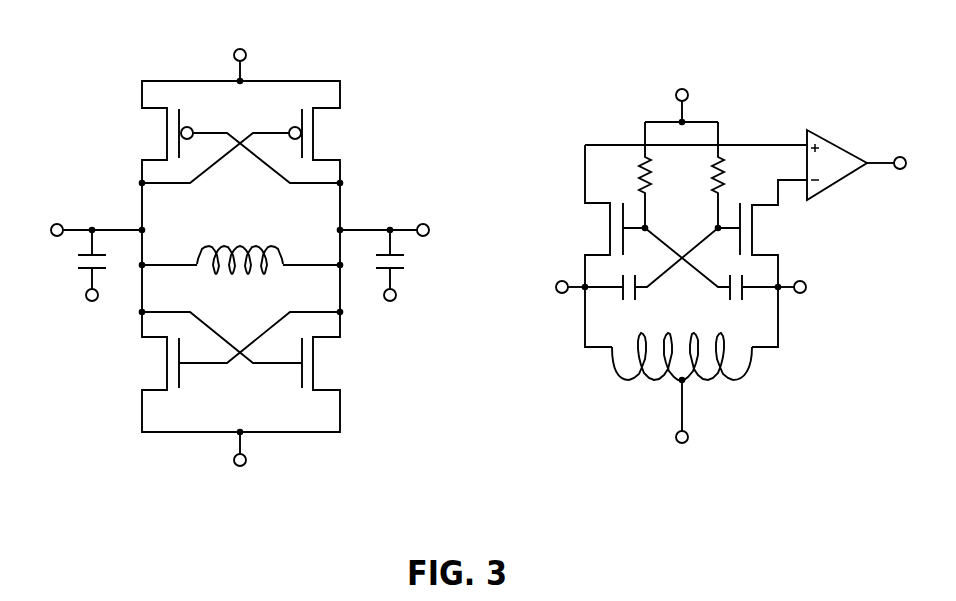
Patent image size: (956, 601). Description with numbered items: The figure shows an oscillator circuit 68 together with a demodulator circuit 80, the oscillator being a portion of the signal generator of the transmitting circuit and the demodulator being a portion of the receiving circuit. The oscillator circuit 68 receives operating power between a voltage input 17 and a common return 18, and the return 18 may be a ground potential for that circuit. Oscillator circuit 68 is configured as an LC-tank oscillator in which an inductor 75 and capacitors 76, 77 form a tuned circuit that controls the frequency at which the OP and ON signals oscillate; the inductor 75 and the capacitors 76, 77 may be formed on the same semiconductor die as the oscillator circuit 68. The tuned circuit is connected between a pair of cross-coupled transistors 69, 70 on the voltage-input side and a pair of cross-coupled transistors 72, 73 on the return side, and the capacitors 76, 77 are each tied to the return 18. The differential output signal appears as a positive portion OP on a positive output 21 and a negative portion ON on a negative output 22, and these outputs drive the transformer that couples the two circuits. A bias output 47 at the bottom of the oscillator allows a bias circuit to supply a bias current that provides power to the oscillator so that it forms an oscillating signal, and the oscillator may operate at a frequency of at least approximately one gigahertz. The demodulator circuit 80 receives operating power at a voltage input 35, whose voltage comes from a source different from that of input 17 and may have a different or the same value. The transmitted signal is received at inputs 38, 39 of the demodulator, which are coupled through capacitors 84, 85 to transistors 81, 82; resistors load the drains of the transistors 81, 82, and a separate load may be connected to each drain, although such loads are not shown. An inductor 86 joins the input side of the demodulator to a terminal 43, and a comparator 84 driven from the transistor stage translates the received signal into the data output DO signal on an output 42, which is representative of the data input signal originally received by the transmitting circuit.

The voltage input 17 is at (245, 51).
The common return 18 is at (86, 300).
The positive output 21 is at (52, 235).
The negative output 22 is at (426, 236).
The voltage input 35 is at (688, 93).
The detector input terminal IP 38 is at (560, 294).
The detector input terminal IN 39 is at (803, 294).
The output 42 is at (898, 157).
The ground terminal 43 is at (677, 442).
The bias output 47 is at (245, 465).
The oscillator circuit 68 is at (182, 453).
The cross-coupled PMOS transistor 69 is at (158, 102).
The cross-coupled PMOS transistor 70 is at (318, 103).
The cross-coupled NMOS transistor 72 is at (165, 392).
The cross-coupled NMOS transistor 73 is at (307, 394).
The inductor 75 is at (245, 243).
The capacitor 76 is at (405, 268).
The capacitor 77 is at (101, 270).
The demodulator circuit 80 is at (732, 402).
The transistor 81 is at (610, 230).
The transistor 82 is at (758, 231).
The capacitor / comparator 84 is at (630, 303).
The capacitor 85 is at (735, 302).
The inductor 86 is at (637, 336).